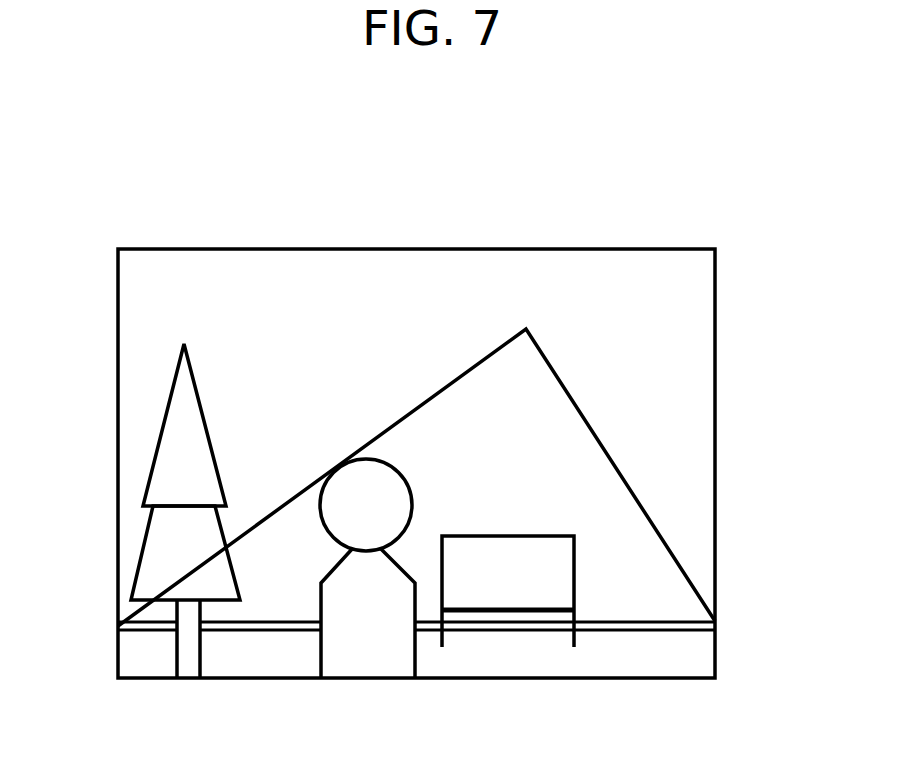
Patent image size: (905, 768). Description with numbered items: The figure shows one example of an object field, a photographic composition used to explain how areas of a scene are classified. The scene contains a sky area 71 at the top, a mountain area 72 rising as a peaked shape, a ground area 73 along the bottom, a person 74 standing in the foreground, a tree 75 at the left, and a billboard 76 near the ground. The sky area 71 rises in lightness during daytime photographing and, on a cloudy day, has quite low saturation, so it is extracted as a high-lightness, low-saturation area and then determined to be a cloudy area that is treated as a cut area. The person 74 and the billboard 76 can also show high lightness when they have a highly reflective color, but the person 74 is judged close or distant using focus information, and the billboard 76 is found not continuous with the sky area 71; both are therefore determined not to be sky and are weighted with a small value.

The sky area 71 is at (432, 268).
The mountain area 72 is at (608, 490).
The ground area 73 is at (653, 663).
The person 74 is at (360, 665).
The tree 75 is at (178, 467).
The billboard 76 is at (506, 590).